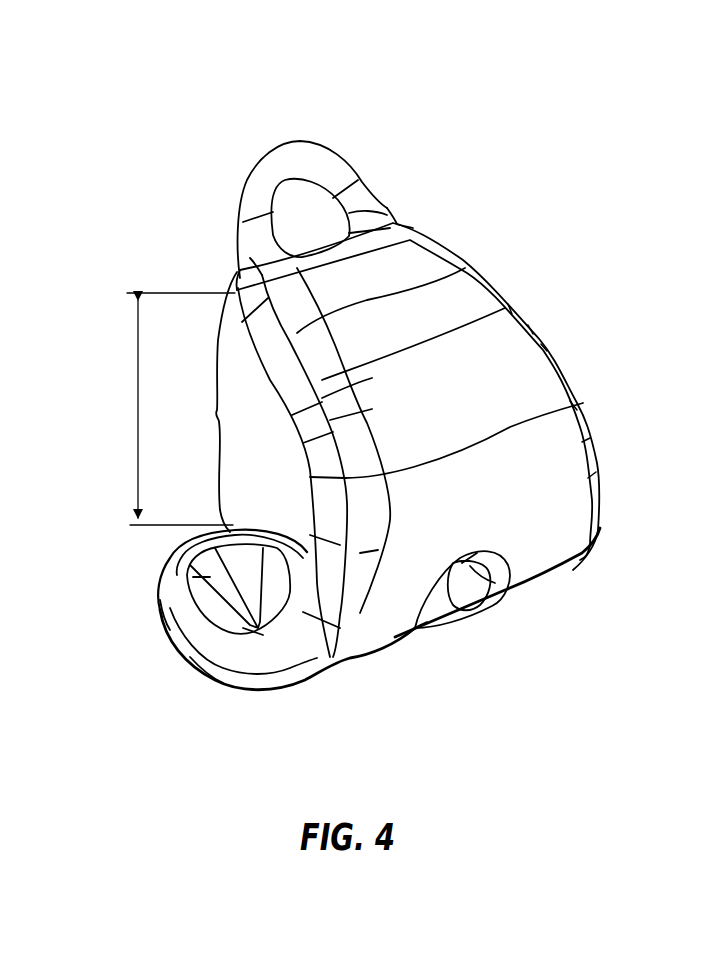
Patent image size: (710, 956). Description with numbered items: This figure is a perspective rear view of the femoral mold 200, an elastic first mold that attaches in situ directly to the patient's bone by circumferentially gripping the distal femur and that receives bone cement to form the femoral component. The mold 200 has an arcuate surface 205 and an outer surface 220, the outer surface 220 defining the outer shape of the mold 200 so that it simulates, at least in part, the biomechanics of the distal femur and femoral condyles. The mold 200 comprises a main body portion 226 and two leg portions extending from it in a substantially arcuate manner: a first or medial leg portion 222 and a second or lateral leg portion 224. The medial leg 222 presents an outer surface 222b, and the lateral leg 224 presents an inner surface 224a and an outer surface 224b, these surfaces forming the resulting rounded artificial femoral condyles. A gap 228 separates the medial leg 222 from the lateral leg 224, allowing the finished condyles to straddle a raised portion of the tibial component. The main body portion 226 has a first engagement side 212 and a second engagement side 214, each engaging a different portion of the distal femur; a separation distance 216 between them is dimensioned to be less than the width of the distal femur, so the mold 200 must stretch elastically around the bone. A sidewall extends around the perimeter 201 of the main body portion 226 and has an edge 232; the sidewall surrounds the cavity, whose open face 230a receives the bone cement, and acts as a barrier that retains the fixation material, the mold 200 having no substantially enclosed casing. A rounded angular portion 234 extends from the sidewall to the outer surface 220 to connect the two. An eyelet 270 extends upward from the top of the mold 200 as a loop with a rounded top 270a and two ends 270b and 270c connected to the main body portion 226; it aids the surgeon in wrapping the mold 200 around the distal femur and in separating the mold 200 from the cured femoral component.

The femoral mold 200 is at (547, 280).
The perimeter 201 is at (465, 268).
The arcuate surface 205 is at (508, 522).
The first engagement side 212 is at (182, 542).
The second engagement side 214 is at (250, 273).
The separation distance 216 is at (177, 409).
The outer surface 220 is at (545, 460).
The first leg portion 222 is at (507, 605).
The outer surface of medial leg 222b is at (415, 633).
The second leg portion 224 is at (200, 668).
The inner surface of lateral leg 224a is at (160, 613).
The outer surface of lateral leg 224b is at (223, 682).
The main body portion 226 is at (497, 400).
The gap 228 is at (446, 595).
The open face 230a is at (218, 410).
The edge 232 is at (177, 568).
The angular portion 234 is at (273, 677).
The eyelet 270 is at (292, 158).
The rounded top 270a is at (260, 147).
The first end of eyelet 270b is at (387, 220).
The second end of eyelet 270c is at (255, 272).